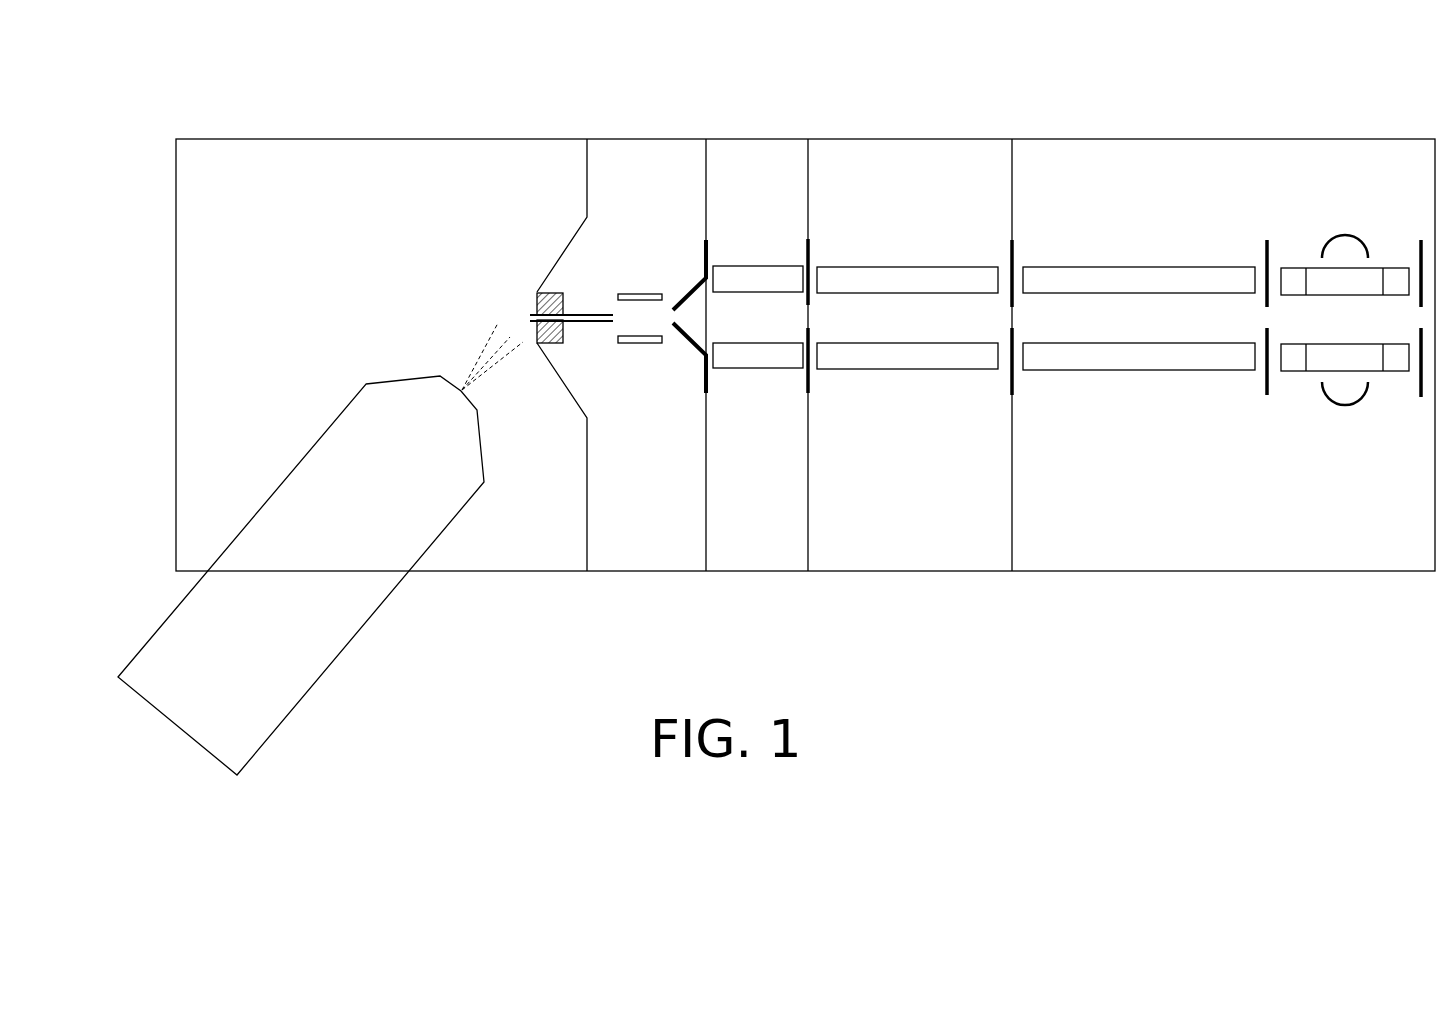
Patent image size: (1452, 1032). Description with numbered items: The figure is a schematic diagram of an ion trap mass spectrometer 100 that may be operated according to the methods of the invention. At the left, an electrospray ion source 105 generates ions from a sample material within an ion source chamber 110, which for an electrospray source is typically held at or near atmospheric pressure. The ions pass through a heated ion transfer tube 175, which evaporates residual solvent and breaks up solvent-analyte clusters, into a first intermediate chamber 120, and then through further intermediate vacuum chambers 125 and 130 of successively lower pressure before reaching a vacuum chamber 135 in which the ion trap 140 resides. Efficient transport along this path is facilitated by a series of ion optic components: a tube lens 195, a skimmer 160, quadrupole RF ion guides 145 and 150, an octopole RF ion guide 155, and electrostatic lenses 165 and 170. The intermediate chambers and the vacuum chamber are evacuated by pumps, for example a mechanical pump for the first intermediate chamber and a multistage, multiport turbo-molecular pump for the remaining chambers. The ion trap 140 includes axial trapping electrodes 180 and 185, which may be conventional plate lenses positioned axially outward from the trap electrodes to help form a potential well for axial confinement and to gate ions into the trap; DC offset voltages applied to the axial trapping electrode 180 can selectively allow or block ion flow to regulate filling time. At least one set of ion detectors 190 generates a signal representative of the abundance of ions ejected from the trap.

The ion trap mass spectrometer 100 is at (472, 683).
The electrospray ion source 105 is at (317, 680).
The ion source chamber 110 is at (387, 167).
The first intermediate chamber 120 is at (645, 163).
The intermediate vacuum chamber 125 is at (772, 160).
The intermediate vacuum chamber 130 is at (900, 167).
The vacuum chamber 135 is at (1130, 167).
The ion trap 140 is at (1312, 268).
The quadrupole RF ion guide 145 is at (787, 263).
The quadrupole RF ion guide 150 is at (913, 369).
The octopole RF ion guide 155 is at (1113, 369).
The skimmer 160 is at (703, 368).
The electrostatic lens 165 is at (805, 380).
The electrostatic lens 170 is at (1013, 260).
The ion transfer tube 175 is at (580, 315).
The axial trapping electrode 180 is at (1267, 395).
The axial trapping electrode 185 is at (1422, 240).
The ion detectors 190 is at (1345, 235).
The tube lens 195 is at (655, 343).